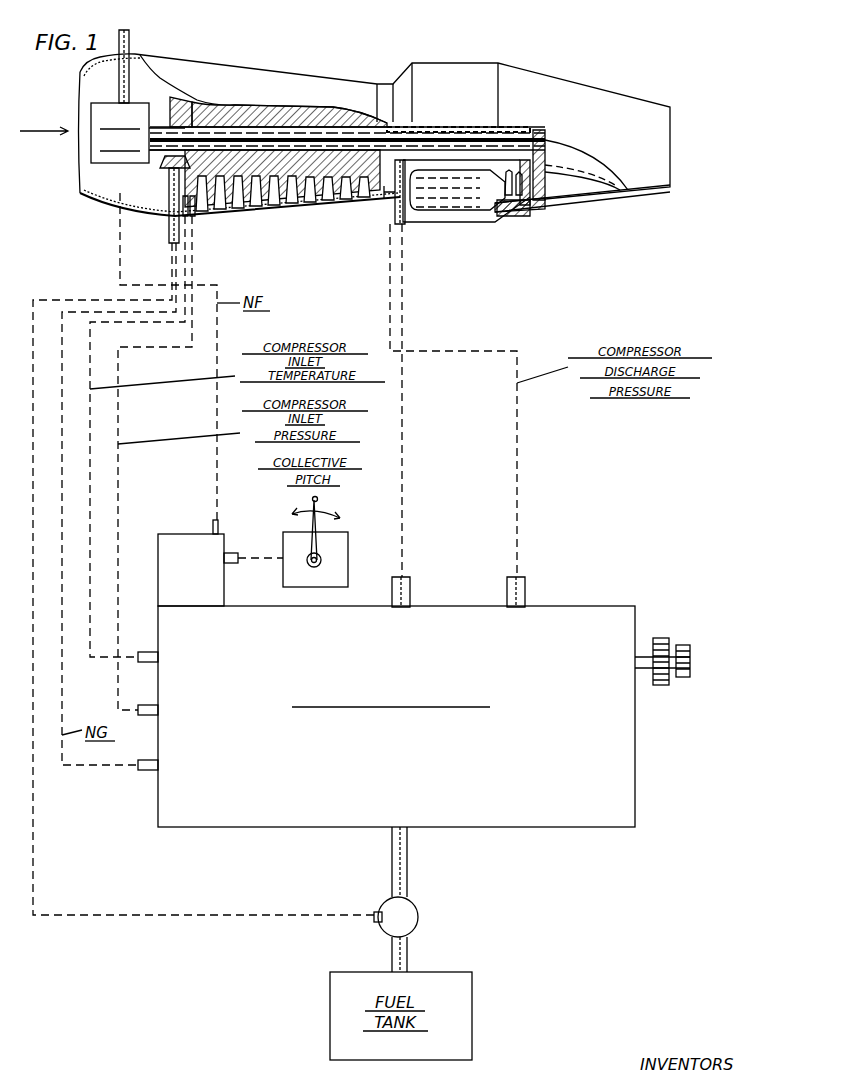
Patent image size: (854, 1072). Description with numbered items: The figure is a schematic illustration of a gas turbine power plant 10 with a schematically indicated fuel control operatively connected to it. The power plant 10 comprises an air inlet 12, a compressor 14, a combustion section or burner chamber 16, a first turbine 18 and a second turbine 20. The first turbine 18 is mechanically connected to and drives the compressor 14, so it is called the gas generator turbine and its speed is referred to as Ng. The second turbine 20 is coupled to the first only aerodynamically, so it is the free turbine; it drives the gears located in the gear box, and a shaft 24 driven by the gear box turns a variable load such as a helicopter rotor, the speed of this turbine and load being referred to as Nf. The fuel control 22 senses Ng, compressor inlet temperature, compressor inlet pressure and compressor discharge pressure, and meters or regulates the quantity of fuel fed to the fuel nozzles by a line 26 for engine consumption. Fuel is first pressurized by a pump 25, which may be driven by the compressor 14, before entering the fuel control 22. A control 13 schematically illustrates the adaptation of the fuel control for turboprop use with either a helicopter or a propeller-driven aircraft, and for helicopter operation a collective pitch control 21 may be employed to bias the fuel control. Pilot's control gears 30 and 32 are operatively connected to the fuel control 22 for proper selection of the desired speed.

The gas turbine power plant 10 is at (272, 72).
The air inlet 12 is at (161, 199).
The control for turboprop adaptation 13 is at (172, 536).
The compressor 14 is at (330, 100).
The combustion section 16 is at (482, 212).
The first turbine 18 is at (522, 212).
The second turbine 20 is at (545, 205).
The collective pitch control 21 is at (308, 502).
The fuel control 22 is at (543, 826).
The shaft 24 is at (129, 42).
The pump 25 is at (420, 917).
The line 26 is at (402, 518).
The pilot's control gear 30 is at (660, 638).
The pilot's control gear 32 is at (685, 645).